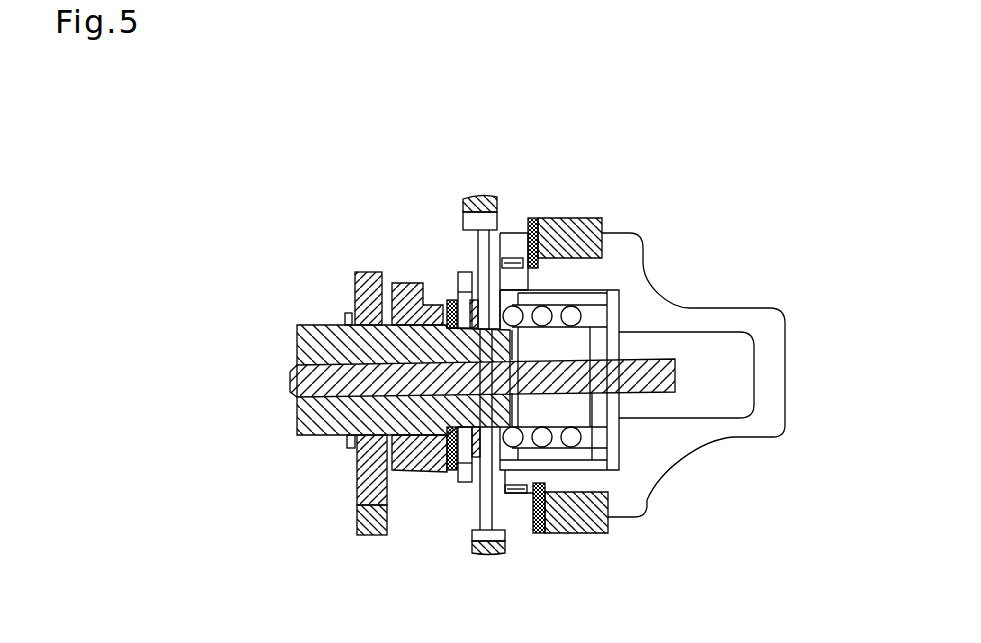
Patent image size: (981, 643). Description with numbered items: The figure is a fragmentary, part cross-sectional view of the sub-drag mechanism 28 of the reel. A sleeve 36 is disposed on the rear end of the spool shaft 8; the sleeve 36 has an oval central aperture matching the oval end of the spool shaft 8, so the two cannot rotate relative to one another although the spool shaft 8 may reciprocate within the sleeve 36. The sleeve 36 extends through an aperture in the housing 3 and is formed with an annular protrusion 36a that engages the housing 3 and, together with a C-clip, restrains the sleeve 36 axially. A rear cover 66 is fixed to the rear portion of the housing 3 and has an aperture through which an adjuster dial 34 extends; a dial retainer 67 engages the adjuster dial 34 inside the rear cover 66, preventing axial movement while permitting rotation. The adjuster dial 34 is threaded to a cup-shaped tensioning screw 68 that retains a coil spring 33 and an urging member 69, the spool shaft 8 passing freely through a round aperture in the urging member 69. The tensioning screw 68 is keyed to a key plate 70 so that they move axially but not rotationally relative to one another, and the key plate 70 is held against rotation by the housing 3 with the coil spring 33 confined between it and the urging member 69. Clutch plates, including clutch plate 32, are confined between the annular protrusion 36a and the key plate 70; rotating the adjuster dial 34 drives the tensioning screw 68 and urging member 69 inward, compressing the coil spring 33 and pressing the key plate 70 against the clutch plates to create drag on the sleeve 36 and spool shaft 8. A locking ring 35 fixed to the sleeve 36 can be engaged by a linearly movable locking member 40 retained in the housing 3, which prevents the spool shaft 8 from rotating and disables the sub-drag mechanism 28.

The sub-drag mechanism 28 is at (619, 159).
The spool shaft 8 is at (310, 383).
The sleeve 36 is at (323, 427).
The housing 3 is at (408, 293).
The locking ring 35 is at (367, 483).
The locking member 40 is at (367, 537).
The annular protrusion 36a is at (443, 475).
The clutch plate 32 is at (463, 482).
The key plate 70 is at (487, 268).
The dial retainer 67 is at (533, 233).
The rear cover 66 is at (588, 218).
The tensioning screw 68 is at (592, 455).
The coil spring 33 is at (573, 316).
The adjuster dial 34 is at (658, 313).
The urging member 69 is at (592, 416).